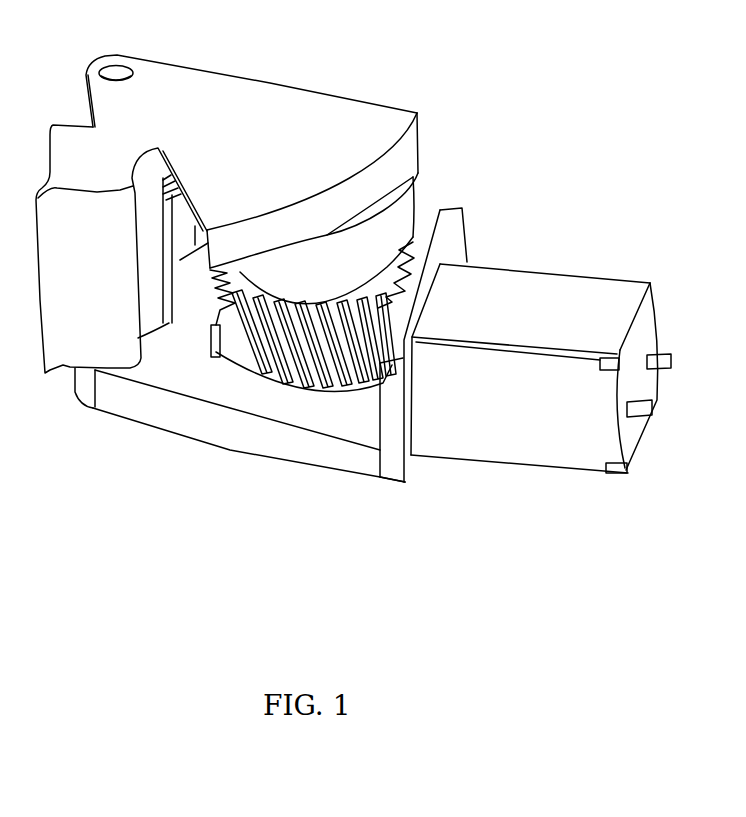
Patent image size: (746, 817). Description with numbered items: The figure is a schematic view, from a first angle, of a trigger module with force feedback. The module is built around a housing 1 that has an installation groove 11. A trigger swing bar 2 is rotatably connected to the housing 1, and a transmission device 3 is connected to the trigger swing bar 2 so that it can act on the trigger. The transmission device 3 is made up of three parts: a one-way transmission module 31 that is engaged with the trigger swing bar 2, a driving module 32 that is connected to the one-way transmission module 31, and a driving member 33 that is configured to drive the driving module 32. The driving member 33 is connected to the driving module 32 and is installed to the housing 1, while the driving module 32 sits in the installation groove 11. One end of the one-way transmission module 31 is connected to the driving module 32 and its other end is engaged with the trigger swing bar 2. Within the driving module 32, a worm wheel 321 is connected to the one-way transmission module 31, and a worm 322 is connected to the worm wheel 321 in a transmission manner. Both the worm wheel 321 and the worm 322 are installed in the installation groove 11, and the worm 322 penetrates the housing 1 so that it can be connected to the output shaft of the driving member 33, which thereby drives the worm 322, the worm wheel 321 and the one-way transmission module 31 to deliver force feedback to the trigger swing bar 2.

The housing 1 is at (462, 218).
The trigger swing bar 2 is at (183, 98).
The transmission device 3 is at (290, 407).
The installation groove 11 is at (173, 352).
The one-way transmission module 31 is at (320, 263).
The driving module 32 is at (263, 404).
The worm wheel 321 is at (297, 383).
The worm 322 is at (228, 352).
The driving member 33 is at (448, 458).